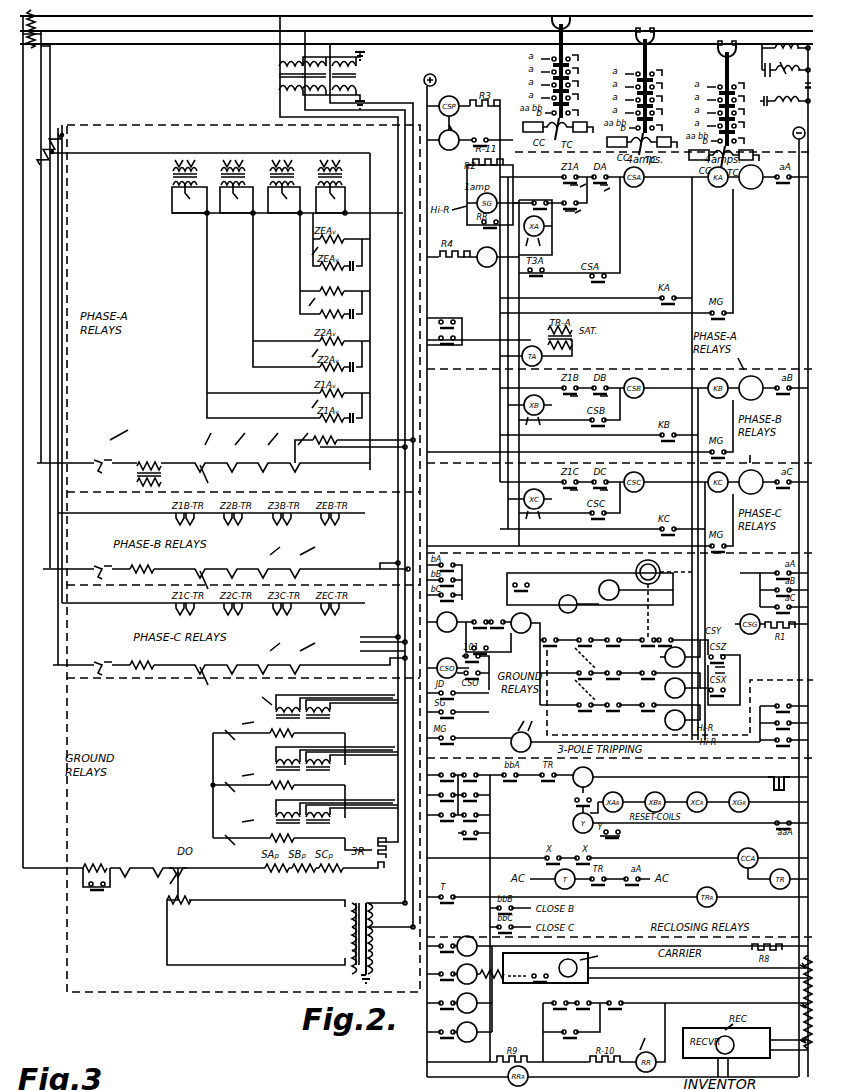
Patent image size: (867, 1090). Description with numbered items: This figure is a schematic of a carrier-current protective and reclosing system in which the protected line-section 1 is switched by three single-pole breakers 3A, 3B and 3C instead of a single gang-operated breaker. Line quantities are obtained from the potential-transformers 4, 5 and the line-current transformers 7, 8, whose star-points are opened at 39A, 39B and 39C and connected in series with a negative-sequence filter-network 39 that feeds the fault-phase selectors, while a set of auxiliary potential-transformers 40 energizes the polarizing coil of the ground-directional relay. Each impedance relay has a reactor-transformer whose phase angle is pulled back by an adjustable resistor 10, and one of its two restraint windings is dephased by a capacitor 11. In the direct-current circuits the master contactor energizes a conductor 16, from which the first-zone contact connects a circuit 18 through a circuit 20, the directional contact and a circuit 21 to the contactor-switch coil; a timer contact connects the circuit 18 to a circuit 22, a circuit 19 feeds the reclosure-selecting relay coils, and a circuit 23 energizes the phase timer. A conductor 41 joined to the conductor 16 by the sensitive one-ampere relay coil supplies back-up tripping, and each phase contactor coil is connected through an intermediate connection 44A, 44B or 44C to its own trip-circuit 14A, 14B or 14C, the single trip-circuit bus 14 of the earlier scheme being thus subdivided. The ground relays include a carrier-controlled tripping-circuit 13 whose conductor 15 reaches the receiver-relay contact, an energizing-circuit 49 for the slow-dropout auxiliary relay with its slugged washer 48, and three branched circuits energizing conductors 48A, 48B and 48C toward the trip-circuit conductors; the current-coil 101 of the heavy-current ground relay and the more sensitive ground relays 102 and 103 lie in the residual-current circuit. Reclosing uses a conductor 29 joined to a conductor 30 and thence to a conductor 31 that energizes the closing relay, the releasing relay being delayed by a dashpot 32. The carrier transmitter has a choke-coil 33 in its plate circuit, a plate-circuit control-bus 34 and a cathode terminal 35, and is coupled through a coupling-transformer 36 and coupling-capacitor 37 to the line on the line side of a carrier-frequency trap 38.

The protected line-section 1 is at (741, 32).
The single-pole breaker 3A is at (570, 24).
The single-pole breaker 3B is at (655, 39).
The single-pole breaker 3C is at (722, 103).
The potential-transformers 4 is at (276, 74).
The potential transformer 5 is at (356, 74).
The line-current transformers 7 is at (26, 65).
The resistors 8 is at (35, 183).
The adjustable resistor 10 is at (194, 213).
The capacitor 11 is at (362, 314).
The ground-fault tripping-circuit 13 is at (448, 632).
The trip-circuit bus 14 is at (555, 655).
The phase-A trip-circuit 14A is at (732, 194).
The phase-B trip-circuit 14B is at (736, 414).
The phase-C trip-circuit 14C is at (736, 508).
The conductor 15 is at (510, 645).
The conductor 16 is at (460, 136).
The circuit 18 is at (456, 526).
The circuit 19 is at (491, 106).
The circuit 20 is at (586, 201).
The circuit 21 is at (620, 222).
The circuit 22 is at (579, 210).
The circuit 23 is at (464, 344).
The conductor 29 is at (464, 761).
The conductor 30 is at (490, 803).
The conductor 31 is at (568, 794).
The dashpot 32 is at (774, 791).
The radio-frequency choke-coil 33 is at (542, 980).
The plate-circuit control-bus 34 is at (491, 1016).
The cathode-circuit transmitter-terminal 35 is at (543, 1020).
The coupling-transformer 36 is at (800, 995).
The coupling-capacitor 37 is at (803, 86).
The carrier-frequency trap 38 is at (762, 44).
The negative-sequence filter-network 39 is at (348, 731).
The opened star-point 39A is at (348, 469).
The opened star-point 39B is at (350, 569).
The opened star-point 39C is at (345, 665).
The auxiliary potential-transformers 40 is at (357, 901).
The conductor 41 is at (500, 171).
The intermediate connection 44A is at (684, 180).
The intermediate connection 44B is at (692, 392).
The intermediate connection 44C is at (692, 486).
The slugged coil 48 is at (634, 567).
The conductor 48A is at (660, 654).
The conductor 48B is at (648, 686).
The conductor 48C is at (658, 717).
The energizing-circuit 49 is at (539, 573).
The current-coil 101 is at (118, 844).
The instantaneous ground-relay 102 is at (152, 844).
The instantaneous ground-relay 103 is at (187, 845).